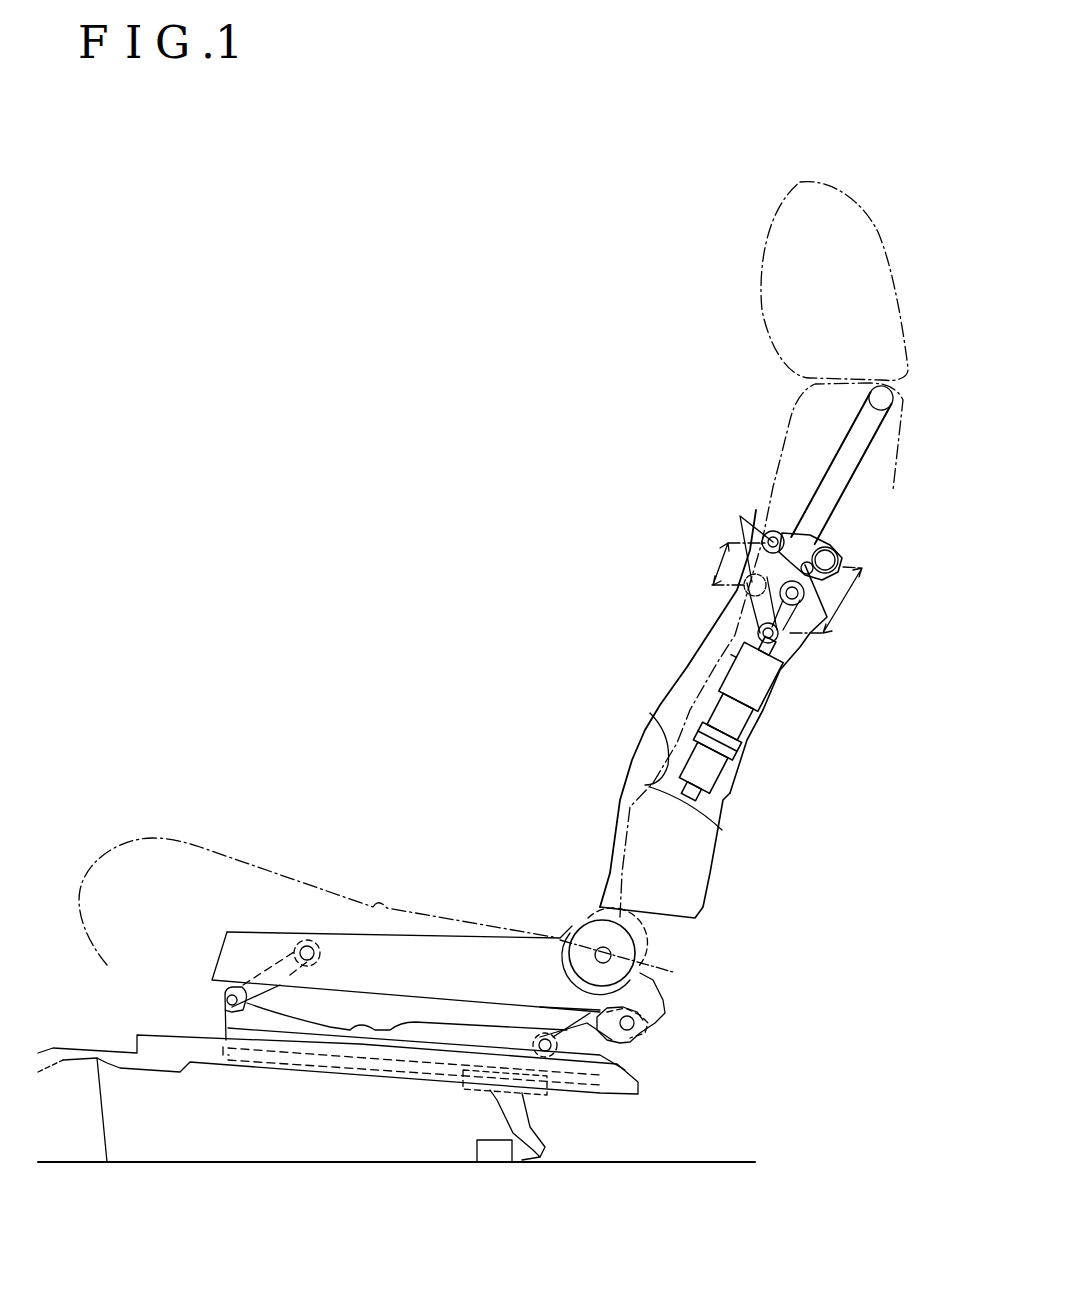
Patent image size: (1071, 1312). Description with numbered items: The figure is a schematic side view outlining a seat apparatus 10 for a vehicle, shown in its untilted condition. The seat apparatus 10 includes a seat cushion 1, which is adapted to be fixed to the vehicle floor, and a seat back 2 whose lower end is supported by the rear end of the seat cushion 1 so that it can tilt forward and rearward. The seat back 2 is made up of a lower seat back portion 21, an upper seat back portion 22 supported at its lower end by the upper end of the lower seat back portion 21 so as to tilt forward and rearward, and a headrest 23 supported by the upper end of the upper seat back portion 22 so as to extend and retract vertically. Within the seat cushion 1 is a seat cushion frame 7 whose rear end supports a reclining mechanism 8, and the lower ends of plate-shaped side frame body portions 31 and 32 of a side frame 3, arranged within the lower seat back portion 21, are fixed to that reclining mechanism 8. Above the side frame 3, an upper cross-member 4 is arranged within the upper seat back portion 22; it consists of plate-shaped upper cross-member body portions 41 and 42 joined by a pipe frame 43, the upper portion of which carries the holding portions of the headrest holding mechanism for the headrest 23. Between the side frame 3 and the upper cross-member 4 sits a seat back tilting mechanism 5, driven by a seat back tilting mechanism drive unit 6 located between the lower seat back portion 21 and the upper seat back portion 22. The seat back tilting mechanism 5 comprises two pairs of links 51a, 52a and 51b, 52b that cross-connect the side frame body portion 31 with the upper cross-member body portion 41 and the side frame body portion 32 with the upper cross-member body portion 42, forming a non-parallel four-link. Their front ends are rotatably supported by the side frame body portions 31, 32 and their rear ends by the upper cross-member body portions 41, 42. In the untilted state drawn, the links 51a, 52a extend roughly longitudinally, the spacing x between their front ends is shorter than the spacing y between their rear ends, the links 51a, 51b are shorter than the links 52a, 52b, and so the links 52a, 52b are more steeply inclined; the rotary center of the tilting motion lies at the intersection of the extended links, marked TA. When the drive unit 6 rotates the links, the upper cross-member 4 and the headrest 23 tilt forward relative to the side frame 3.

The seat cushion 1 is at (317, 855).
The seat back 2 is at (609, 432).
The side frame 3 is at (775, 798).
The upper cross-member 4 is at (880, 493).
The seat back tilting mechanism 5 is at (905, 585).
The seat back tilting mechanism drive unit 6 is at (799, 710).
The seat cushion frame 7 is at (420, 917).
The reclining mechanism 8 is at (709, 1057).
The seat apparatus 10 is at (173, 470).
The lower seat back portion 21 is at (650, 712).
The upper seat back portion 22 is at (785, 428).
The headrest 23 is at (762, 275).
The side frame body portion 31 is at (720, 800).
The side frame body portion 32 is at (700, 870).
The upper cross-member body portion 41 is at (825, 540).
The upper cross-member body portion 42 is at (844, 554).
The pipe frame 43 is at (836, 497).
The link 51a is at (807, 572).
The link 51b is at (833, 605).
The link 52a is at (780, 610).
The link 52b is at (833, 627).